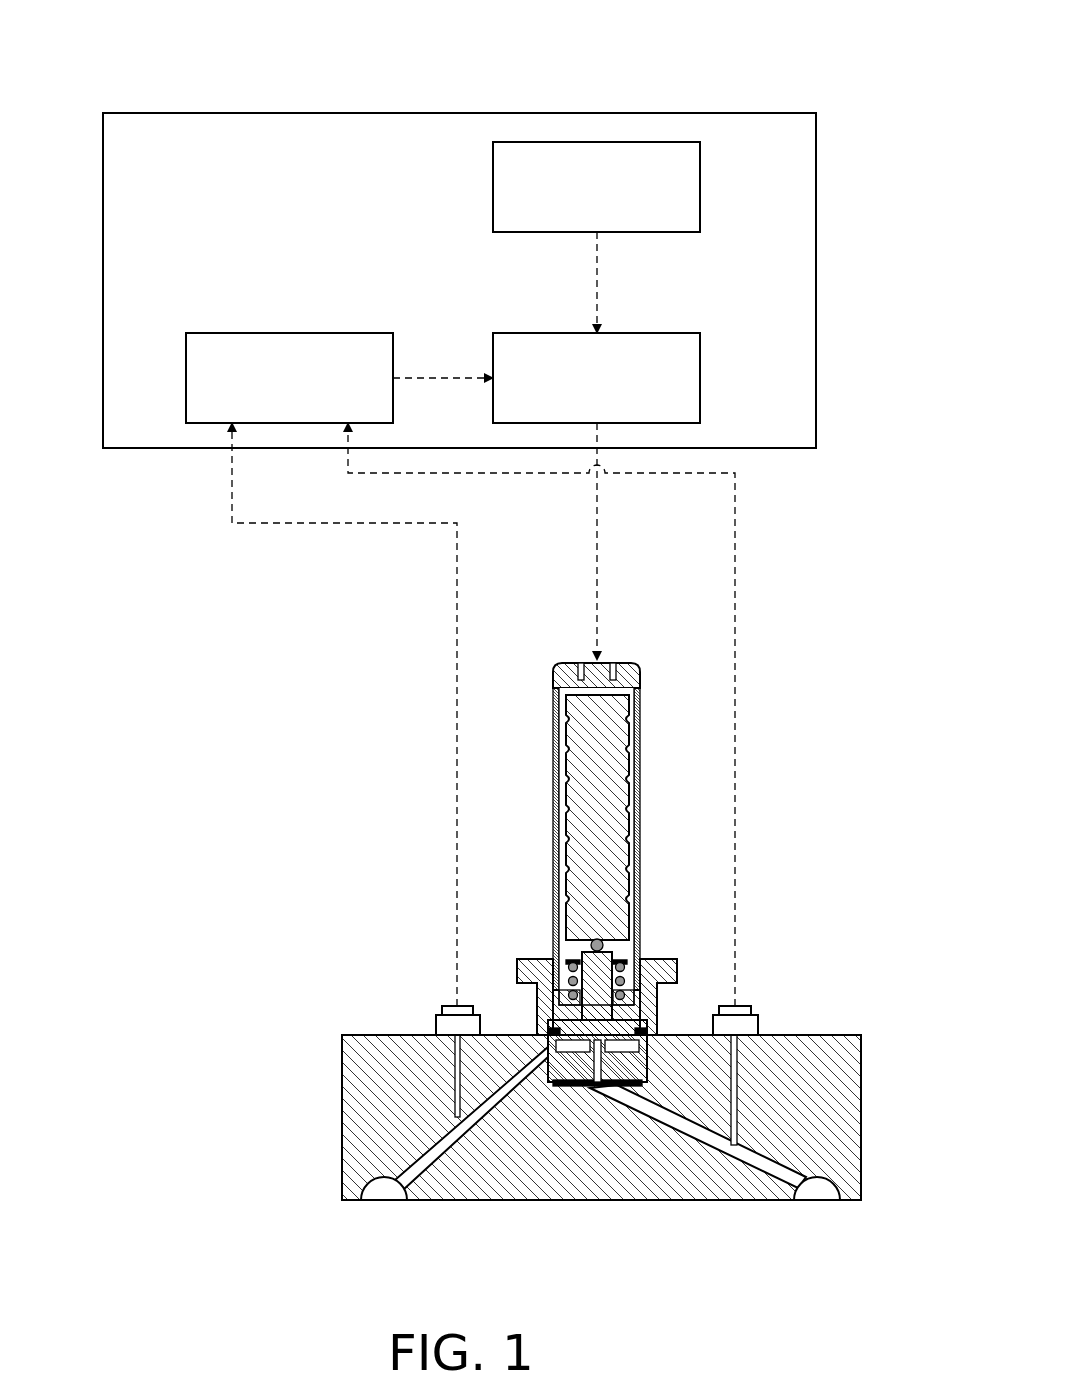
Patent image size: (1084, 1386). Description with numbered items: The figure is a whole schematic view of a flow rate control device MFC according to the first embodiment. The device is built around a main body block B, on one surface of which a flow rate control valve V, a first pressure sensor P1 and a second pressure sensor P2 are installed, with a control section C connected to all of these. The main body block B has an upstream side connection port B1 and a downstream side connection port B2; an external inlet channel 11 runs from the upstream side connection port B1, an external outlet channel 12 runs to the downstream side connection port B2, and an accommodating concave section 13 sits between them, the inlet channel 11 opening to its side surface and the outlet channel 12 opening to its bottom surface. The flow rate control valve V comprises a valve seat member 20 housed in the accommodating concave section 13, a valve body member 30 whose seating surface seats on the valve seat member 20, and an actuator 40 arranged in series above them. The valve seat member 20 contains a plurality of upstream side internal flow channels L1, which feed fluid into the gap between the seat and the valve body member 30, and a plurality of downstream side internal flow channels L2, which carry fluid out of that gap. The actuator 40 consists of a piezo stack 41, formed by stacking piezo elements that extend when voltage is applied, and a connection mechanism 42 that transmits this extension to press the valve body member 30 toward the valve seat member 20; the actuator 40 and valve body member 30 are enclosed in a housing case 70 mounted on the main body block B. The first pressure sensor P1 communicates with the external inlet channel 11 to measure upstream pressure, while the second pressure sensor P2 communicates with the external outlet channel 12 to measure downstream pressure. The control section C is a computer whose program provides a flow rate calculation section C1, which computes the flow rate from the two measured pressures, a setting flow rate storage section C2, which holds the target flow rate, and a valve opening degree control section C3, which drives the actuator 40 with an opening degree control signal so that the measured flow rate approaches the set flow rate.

The flow rate control device MFC is at (732, 62).
The control section C is at (816, 113).
The flow rate calculation section C1 is at (393, 333).
The setting flow rate storage section C2 is at (493, 186).
The valve opening degree control section C3 is at (700, 333).
The flow rate control valve V is at (556, 662).
The housing case 70 is at (643, 770).
The actuator 40 is at (502, 857).
The piezo stack 41 is at (566, 820).
The connection mechanism 42 is at (555, 945).
The valve body member 30 is at (652, 965).
The main body block B is at (342, 1035).
The external inlet channel 11 is at (400, 1150).
The external outlet channel 12 is at (790, 1162).
The accommodating concave section 13 is at (528, 1086).
The valve seat member 20 is at (578, 1086).
The upstream side internal flow channel L1 is at (685, 992).
The downstream side internal flow channel L2 is at (604, 1095).
The first pressure sensor P1 is at (442, 1006).
The second pressure sensor P2 is at (750, 1006).
The upstream side connection port B1 is at (378, 1207).
The downstream side connection port B2 is at (826, 1207).